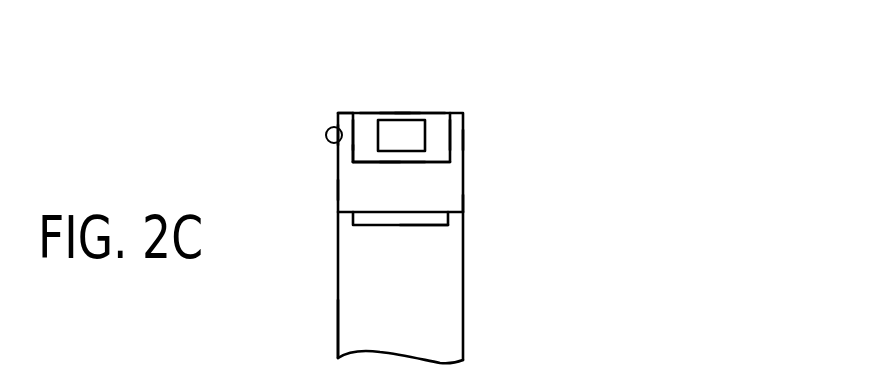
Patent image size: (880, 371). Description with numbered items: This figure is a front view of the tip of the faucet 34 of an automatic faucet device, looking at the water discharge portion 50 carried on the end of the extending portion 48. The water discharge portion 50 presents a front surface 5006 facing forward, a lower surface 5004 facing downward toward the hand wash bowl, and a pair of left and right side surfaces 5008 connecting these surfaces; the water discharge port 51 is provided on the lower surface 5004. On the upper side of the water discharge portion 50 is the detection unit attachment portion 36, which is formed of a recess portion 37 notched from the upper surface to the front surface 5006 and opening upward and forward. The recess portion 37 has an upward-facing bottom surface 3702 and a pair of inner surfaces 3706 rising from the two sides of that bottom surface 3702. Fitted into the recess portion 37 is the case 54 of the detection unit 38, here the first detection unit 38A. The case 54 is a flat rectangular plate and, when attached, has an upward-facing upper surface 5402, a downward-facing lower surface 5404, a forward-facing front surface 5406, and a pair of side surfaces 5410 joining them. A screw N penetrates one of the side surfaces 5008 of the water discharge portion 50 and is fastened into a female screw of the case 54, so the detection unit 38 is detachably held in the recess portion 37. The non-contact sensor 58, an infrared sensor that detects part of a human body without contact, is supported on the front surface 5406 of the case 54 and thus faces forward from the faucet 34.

The faucet 34 is at (273, 132).
The screw N is at (327, 131).
The detection unit attachment portion 36 is at (358, 117).
The recess portion 37 is at (377, 93).
The bottom surface 3702 is at (399, 160).
The inner surfaces 3706 is at (366, 133).
The detection unit 38 is at (437, 56).
The first detection unit 38A is at (429, 56).
The case 54 is at (406, 104).
The upper surface 5402 is at (430, 112).
The lower surface 5404 is at (382, 163).
The front surface 5406 is at (351, 152).
The side surfaces 5410 is at (340, 114).
The extending portion 48 is at (338, 316).
The water discharge portion 50 is at (456, 238).
The lower surface 5004 is at (429, 213).
The front surface 5006 is at (433, 180).
The side surfaces 5008 is at (338, 189).
The water discharge port 51 is at (381, 226).
The non-contact sensor 58 is at (420, 146).